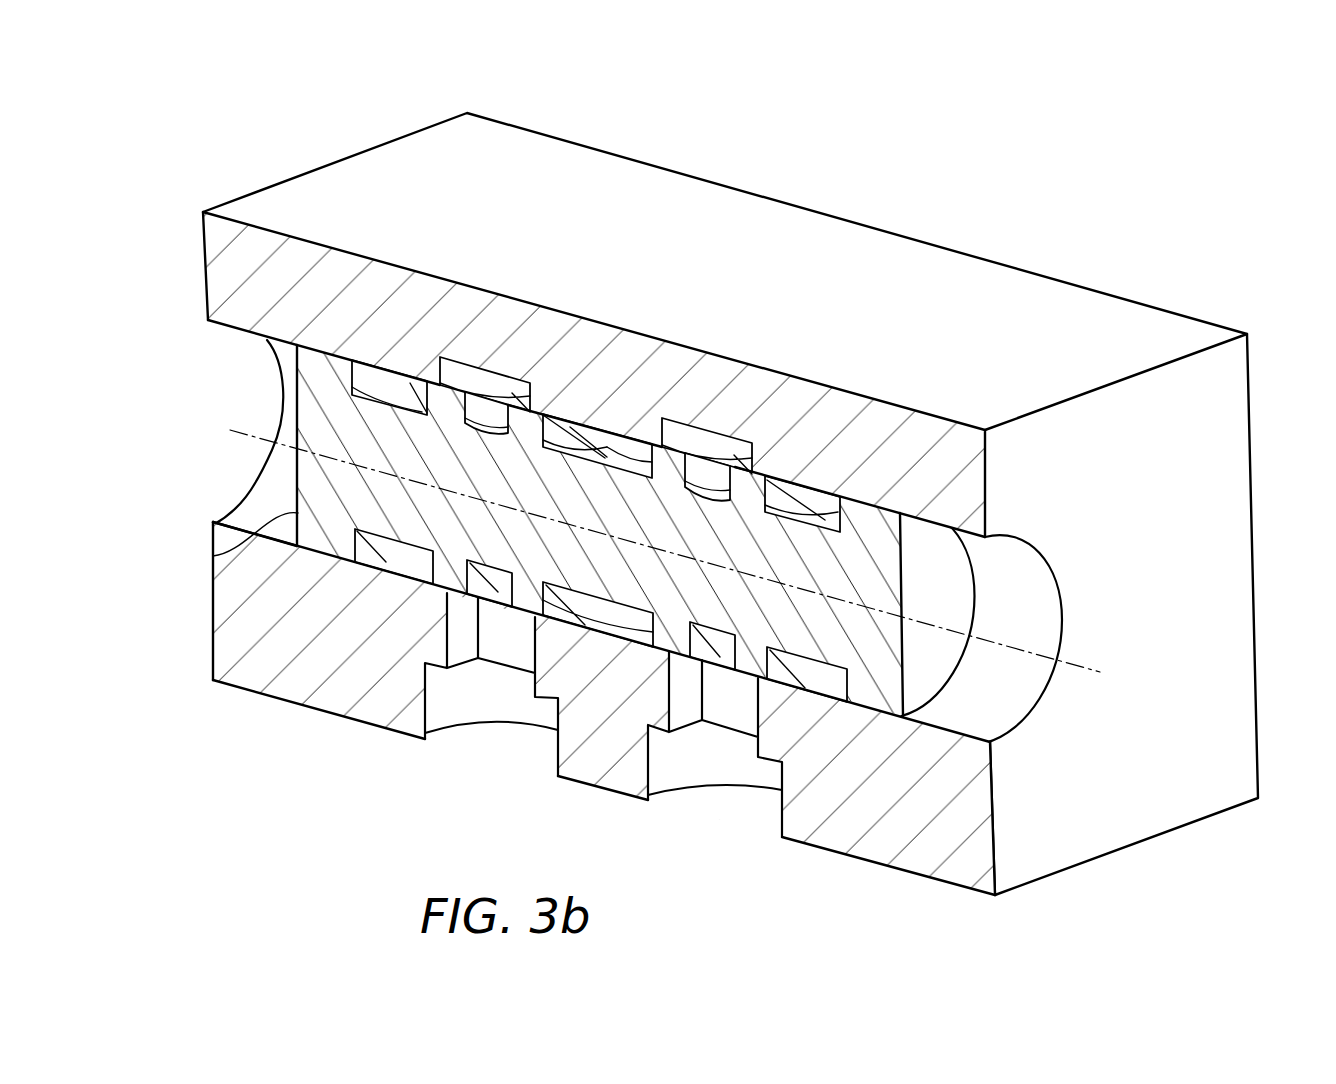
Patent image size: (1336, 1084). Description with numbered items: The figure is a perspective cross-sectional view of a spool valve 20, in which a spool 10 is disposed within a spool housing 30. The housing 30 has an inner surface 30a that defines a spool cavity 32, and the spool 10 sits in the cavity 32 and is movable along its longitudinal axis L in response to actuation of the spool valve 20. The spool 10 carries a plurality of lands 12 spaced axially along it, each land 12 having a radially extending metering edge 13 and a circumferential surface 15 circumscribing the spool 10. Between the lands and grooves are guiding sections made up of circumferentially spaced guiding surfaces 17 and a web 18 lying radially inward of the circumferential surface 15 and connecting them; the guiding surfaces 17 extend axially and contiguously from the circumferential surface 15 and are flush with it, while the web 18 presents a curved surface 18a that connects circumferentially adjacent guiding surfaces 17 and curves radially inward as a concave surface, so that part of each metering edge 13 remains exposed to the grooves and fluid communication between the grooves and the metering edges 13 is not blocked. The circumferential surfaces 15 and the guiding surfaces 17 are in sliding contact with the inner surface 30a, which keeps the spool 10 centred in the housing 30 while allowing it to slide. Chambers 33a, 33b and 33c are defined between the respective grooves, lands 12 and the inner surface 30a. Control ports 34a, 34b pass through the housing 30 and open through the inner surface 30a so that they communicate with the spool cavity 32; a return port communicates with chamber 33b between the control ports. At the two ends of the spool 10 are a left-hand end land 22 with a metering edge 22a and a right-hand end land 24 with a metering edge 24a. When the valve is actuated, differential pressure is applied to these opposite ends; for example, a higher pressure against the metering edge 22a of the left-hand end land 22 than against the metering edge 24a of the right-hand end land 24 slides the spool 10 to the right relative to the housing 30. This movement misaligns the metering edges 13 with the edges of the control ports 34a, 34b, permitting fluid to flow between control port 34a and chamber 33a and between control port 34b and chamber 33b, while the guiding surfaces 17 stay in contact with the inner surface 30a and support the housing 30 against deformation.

The spool valve 20 is at (330, 122).
The spool housing 30 is at (258, 252).
The inner surface 30a is at (272, 370).
The spool cavity 32 is at (252, 506).
The metering edge 22a is at (213, 556).
The left-hand end land 22 is at (328, 549).
The right-hand end land 24 is at (872, 695).
The metering edge 24a is at (905, 660).
The spool 10 is at (780, 547).
The lands 12 is at (442, 350).
The circumferential surface 15 is at (463, 388).
The guiding surfaces 17 is at (543, 413).
The metering edge 13 is at (585, 428).
The curved surface 18a is at (618, 445).
The web 18 is at (645, 440).
The chamber 33a is at (393, 563).
The chamber 33b is at (607, 622).
The chamber 33c is at (813, 677).
The control port 34a is at (497, 712).
The control port 34b is at (722, 776).
The longitudinal axis L is at (658, 547).